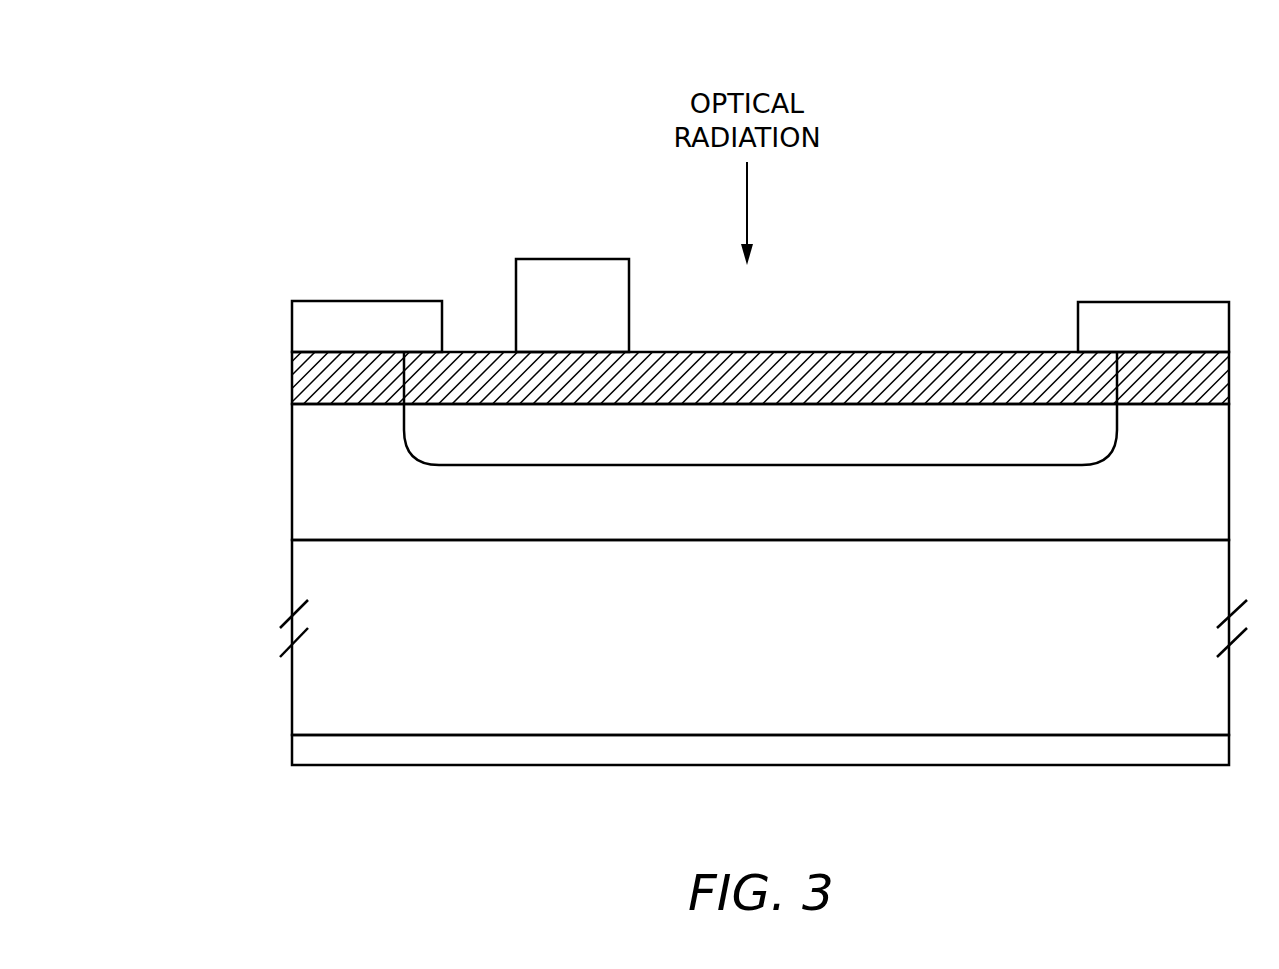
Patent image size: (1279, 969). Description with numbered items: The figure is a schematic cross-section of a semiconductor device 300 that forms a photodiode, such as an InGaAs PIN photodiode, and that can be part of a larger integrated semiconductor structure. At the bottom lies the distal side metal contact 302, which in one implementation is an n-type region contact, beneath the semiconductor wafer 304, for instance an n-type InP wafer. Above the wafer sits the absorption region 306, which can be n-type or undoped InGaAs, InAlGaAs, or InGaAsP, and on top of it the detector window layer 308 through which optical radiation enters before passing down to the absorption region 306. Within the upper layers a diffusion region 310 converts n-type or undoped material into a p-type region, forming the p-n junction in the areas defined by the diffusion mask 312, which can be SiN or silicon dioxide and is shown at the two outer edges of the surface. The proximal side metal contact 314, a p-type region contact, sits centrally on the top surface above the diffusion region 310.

The semiconductor device 300 is at (343, 118).
The distal side metal contact 302 is at (300, 748).
The semiconductor wafer 304 is at (300, 573).
The absorption region 306 is at (300, 464).
The detector window layer 308 is at (300, 378).
The diffusion region 310 is at (809, 437).
The diffusion mask 312 is at (366, 301).
The proximal side metal contact 314 is at (572, 259).